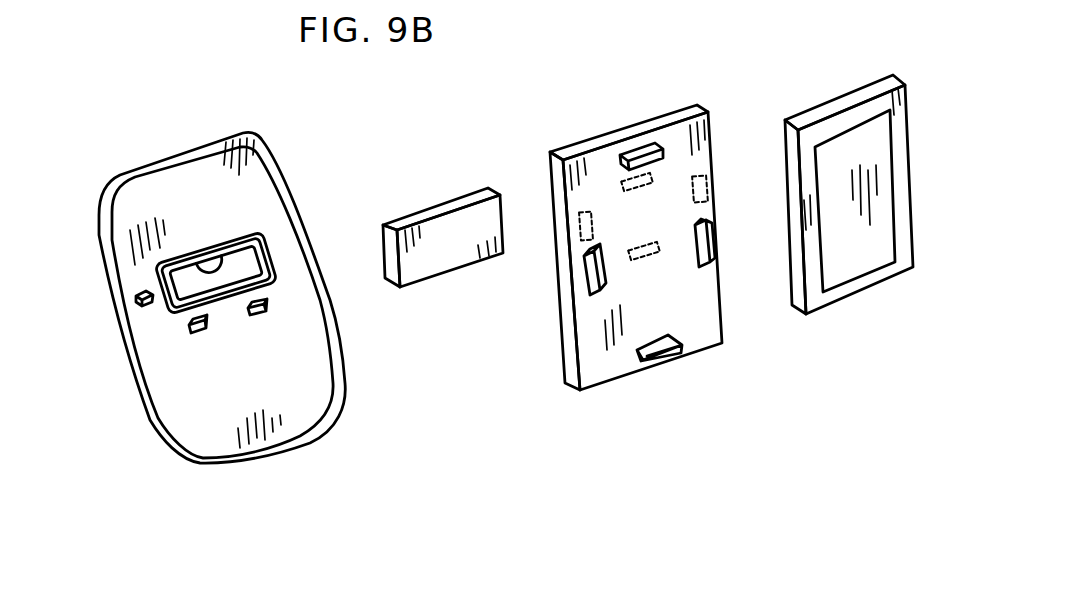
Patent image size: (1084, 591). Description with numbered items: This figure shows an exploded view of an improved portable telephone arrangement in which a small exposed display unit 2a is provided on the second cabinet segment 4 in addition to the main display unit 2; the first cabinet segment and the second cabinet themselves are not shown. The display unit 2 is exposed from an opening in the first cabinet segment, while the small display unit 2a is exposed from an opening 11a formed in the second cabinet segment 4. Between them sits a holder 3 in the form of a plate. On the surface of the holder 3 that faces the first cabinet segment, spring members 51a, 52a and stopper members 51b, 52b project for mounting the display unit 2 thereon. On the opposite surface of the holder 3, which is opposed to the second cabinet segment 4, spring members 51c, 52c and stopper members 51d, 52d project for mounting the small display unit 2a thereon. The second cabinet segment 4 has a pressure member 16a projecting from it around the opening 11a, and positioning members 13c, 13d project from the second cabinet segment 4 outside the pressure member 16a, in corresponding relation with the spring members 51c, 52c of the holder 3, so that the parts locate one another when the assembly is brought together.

The display unit 2 is at (825, 297).
The exposed display unit 2a is at (432, 263).
The holder 3 is at (590, 400).
The second cabinet segment 4 is at (183, 470).
The opening 11a is at (227, 255).
The positioning member 13c is at (205, 334).
The positioning member 13d is at (140, 307).
The pressure member 16a is at (268, 252).
The spring member 51a is at (645, 147).
The stopper member 51b is at (660, 358).
The spring member 51c is at (620, 180).
The stopper member 51d is at (653, 260).
The spring member 52a is at (590, 282).
The stopper member 52b is at (718, 262).
The spring member 52c is at (708, 178).
The stopper member 52d is at (581, 218).